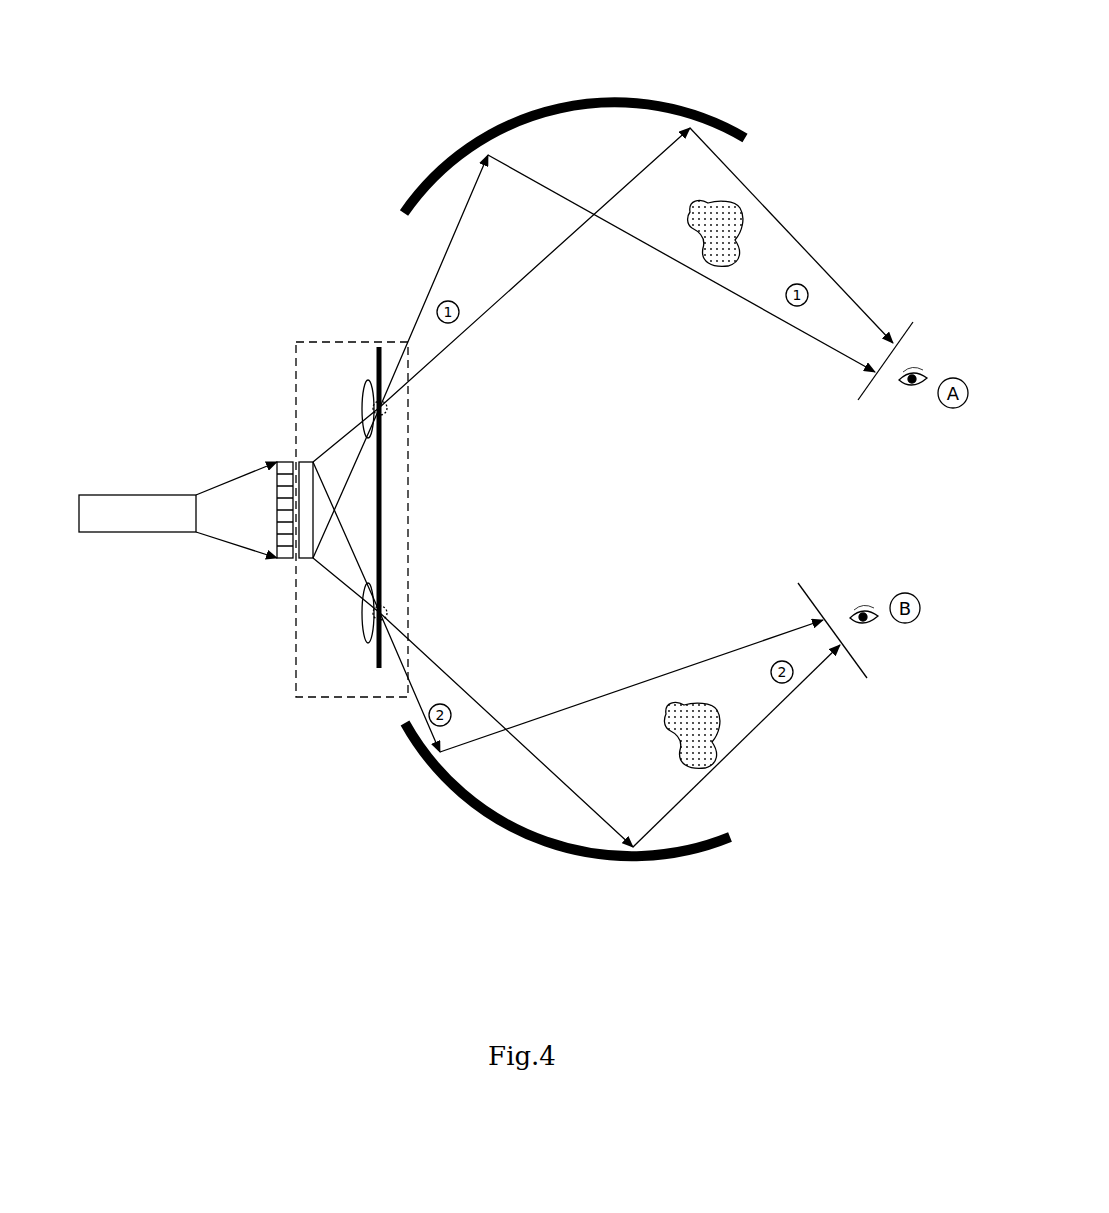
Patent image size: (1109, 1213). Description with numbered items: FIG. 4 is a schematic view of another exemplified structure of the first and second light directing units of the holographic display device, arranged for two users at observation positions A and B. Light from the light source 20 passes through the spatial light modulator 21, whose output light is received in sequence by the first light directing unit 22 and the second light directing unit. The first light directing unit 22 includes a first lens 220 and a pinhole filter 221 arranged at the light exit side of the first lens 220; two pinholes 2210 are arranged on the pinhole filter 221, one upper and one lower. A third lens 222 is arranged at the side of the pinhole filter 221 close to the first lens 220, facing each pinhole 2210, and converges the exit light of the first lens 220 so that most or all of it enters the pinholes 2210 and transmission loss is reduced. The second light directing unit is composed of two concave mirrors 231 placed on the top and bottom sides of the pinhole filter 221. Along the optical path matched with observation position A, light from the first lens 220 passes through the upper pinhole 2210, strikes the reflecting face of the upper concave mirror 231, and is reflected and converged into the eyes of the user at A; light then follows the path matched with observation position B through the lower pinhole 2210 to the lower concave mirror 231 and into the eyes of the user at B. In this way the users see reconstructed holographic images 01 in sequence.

The light source 20 is at (113, 527).
The spatial light modulator 21 is at (283, 493).
The first light directing unit 22 is at (325, 670).
The first lens 220 is at (308, 468).
The pinhole filter 221 is at (383, 535).
The third lens 222 is at (365, 383).
The pinhole 2210 is at (387, 408).
The concave mirror 231 is at (563, 107).
The reconstructed holographic image 01 is at (735, 216).